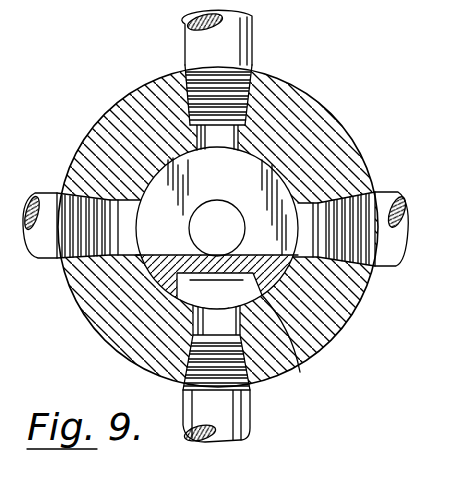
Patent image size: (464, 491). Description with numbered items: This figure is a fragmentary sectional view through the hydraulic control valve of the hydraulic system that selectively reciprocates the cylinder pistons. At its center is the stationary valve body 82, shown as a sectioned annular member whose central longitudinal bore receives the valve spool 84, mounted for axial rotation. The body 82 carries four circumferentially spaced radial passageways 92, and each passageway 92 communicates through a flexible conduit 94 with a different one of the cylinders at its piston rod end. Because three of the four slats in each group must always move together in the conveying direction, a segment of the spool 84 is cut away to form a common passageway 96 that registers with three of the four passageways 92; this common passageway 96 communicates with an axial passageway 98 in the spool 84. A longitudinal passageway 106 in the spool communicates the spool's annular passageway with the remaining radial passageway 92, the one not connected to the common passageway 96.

The valve body 82 is at (214, 227).
The valve spool 84 is at (157, 270).
The radial passageways 92 is at (77, 148).
The flexible conduit 94 is at (202, 47).
The common passageway 96 is at (231, 162).
The axial passageway 98 is at (227, 210).
The longitudinal passageway 106 is at (299, 370).